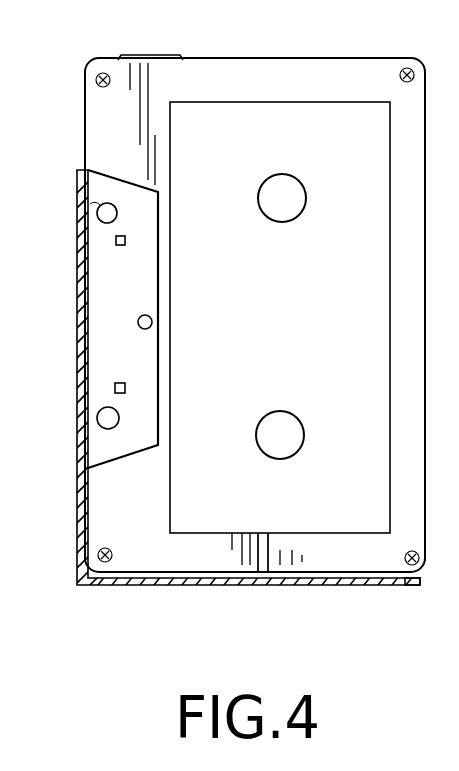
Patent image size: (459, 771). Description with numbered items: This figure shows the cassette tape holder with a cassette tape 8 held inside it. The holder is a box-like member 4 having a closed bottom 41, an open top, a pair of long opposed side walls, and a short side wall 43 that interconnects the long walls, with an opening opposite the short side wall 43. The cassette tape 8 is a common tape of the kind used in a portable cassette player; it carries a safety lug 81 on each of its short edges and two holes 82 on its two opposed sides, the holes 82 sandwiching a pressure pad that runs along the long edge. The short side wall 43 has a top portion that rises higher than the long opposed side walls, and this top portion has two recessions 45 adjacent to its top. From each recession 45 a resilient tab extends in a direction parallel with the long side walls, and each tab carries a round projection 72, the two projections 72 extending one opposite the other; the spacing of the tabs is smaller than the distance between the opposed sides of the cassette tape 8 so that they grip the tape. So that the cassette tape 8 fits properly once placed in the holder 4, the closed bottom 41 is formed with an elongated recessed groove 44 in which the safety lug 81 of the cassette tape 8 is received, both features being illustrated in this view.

The box-like member 4 is at (72, 363).
The cassette tape 8 is at (260, 60).
The closed bottom 41 is at (406, 582).
The short side wall 43 is at (80, 418).
The elongated recessed groove 44 is at (268, 578).
The recession 45 is at (79, 212).
The round projection 72 is at (100, 206).
The safety lug 81 is at (148, 58).
The hole 82 is at (104, 225).